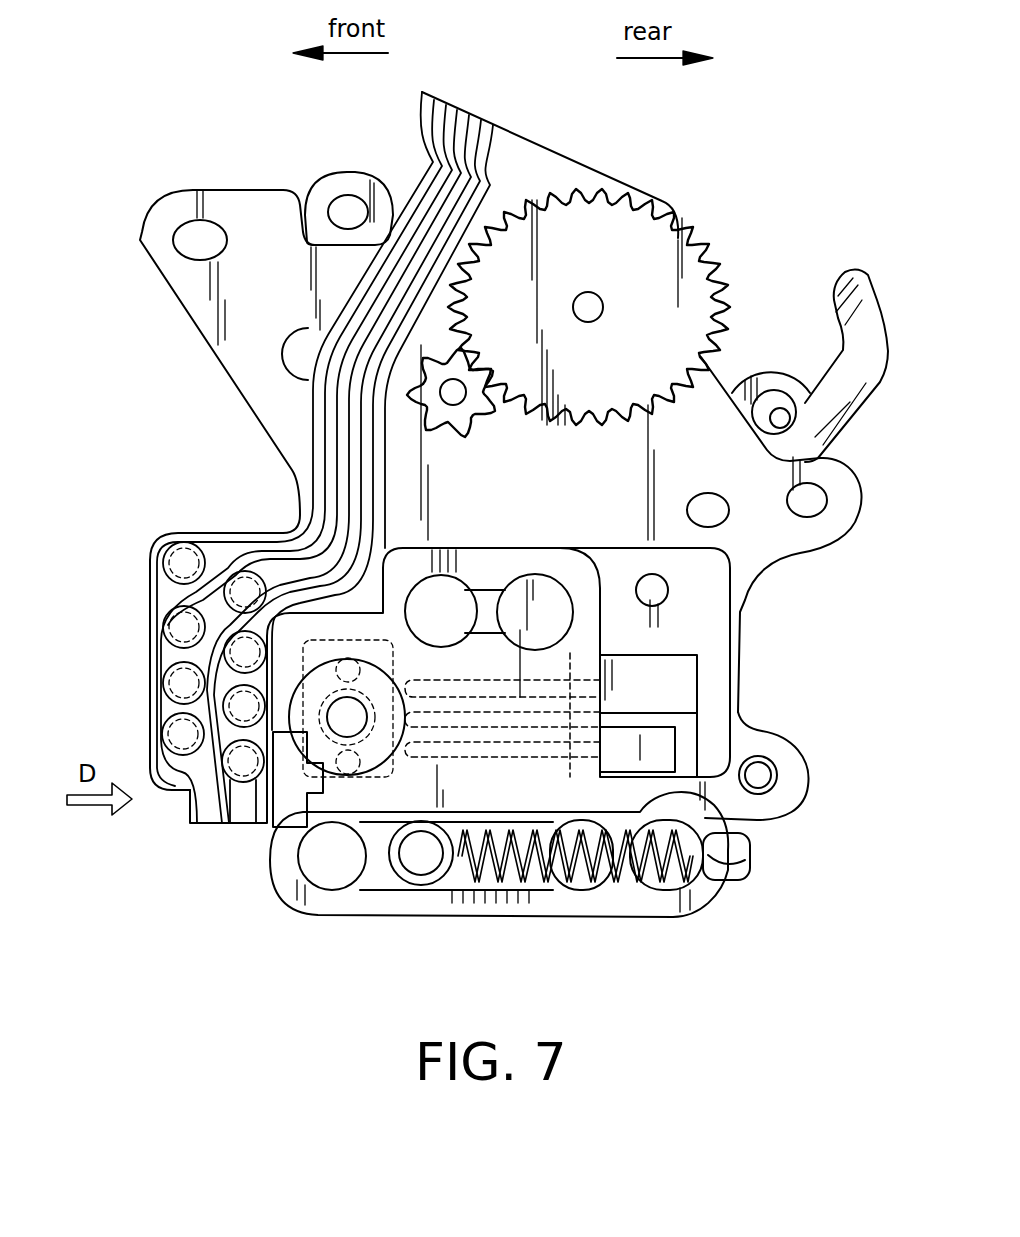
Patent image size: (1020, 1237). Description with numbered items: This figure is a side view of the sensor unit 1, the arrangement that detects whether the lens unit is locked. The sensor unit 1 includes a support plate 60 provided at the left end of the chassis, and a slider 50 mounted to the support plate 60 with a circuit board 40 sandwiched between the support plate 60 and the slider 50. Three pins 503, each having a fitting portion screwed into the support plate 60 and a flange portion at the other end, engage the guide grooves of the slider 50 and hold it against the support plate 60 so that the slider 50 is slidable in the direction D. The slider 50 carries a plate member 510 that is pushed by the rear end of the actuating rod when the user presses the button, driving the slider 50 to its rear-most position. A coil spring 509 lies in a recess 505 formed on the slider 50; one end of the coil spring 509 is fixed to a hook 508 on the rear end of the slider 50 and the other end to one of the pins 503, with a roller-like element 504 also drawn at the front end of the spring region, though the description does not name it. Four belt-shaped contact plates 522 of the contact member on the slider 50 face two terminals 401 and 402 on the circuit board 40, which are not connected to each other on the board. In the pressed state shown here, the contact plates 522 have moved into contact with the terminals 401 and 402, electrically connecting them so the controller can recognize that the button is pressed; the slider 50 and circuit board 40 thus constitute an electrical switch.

The sensor unit 1 is at (772, 186).
The circuit board 40 is at (712, 614).
The terminal 401 is at (680, 665).
The terminal 402 is at (655, 750).
The slider 50 is at (348, 900).
The pin 503 is at (520, 577).
The roller 504 is at (421, 877).
The recess 505 is at (553, 892).
The hook 508 is at (730, 862).
The coil spring 509 is at (527, 890).
The plate member 510 is at (290, 830).
The contact plate 522 is at (467, 750).
The support plate 60 is at (710, 400).